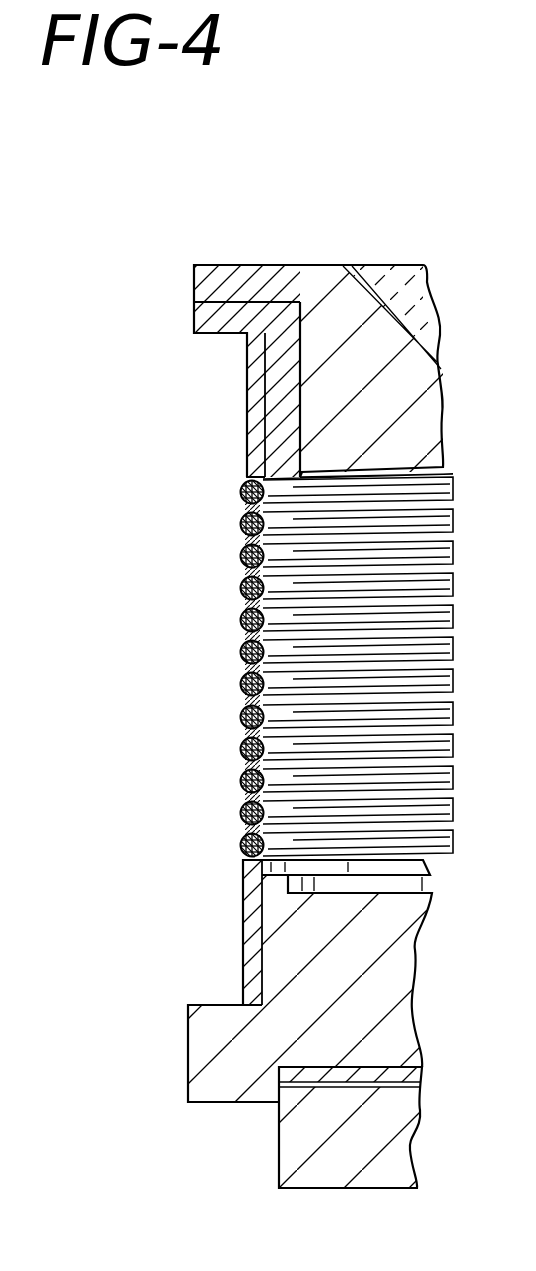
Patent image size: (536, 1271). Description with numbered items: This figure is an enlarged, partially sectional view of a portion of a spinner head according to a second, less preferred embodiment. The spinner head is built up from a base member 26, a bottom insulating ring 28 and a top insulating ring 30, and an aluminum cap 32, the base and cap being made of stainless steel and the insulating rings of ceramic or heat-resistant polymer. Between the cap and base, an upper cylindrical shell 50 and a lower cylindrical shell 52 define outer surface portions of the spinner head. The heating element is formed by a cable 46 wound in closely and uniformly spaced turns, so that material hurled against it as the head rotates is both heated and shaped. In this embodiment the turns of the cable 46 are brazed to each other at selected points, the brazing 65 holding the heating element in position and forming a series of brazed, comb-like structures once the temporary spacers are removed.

The base member 26 is at (280, 1150).
The bottom insulating ring 28 is at (188, 1067).
The top insulating ring 30 is at (193, 315).
The aluminum cap 32 is at (298, 265).
The cable 46 is at (243, 848).
The upper cylindrical shell 50 is at (252, 425).
The lower cylindrical shell 52 is at (243, 960).
The brazing 65 is at (243, 672).